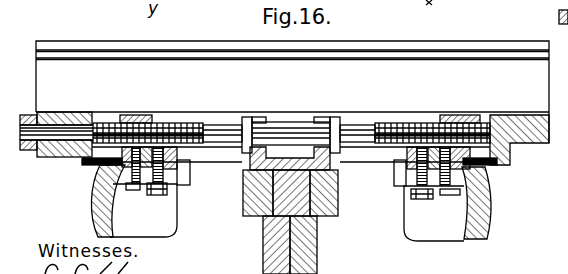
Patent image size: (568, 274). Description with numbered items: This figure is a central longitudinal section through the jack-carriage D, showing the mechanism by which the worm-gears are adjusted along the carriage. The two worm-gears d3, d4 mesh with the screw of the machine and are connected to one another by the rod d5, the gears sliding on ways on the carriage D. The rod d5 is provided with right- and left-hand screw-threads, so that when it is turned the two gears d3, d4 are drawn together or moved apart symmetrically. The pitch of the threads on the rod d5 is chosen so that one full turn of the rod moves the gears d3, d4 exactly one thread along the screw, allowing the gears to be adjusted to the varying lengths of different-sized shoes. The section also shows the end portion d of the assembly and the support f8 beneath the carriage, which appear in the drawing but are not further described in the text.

The carriage D is at (522, 98).
The shaft end d is at (33, 112).
The worm-gear d3 is at (136, 192).
The worm-gear d4 is at (445, 194).
The rod d5 is at (284, 128).
The central support standard f8 is at (318, 243).